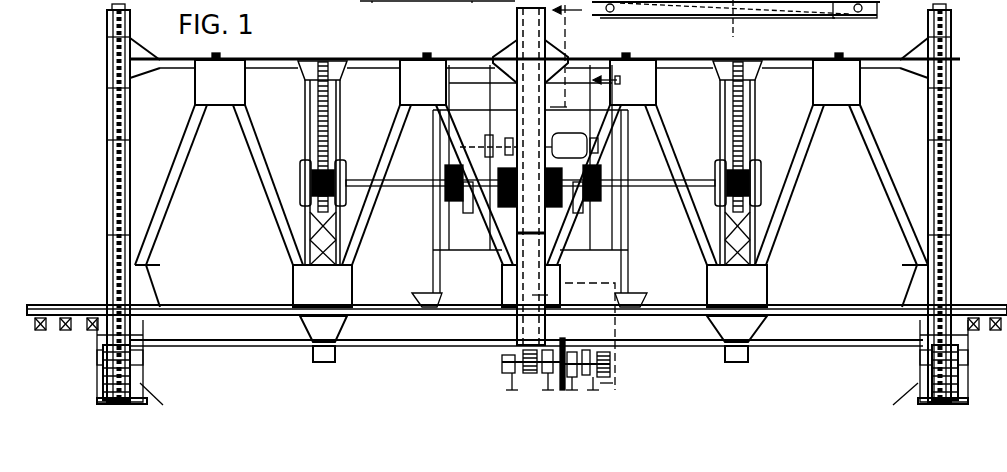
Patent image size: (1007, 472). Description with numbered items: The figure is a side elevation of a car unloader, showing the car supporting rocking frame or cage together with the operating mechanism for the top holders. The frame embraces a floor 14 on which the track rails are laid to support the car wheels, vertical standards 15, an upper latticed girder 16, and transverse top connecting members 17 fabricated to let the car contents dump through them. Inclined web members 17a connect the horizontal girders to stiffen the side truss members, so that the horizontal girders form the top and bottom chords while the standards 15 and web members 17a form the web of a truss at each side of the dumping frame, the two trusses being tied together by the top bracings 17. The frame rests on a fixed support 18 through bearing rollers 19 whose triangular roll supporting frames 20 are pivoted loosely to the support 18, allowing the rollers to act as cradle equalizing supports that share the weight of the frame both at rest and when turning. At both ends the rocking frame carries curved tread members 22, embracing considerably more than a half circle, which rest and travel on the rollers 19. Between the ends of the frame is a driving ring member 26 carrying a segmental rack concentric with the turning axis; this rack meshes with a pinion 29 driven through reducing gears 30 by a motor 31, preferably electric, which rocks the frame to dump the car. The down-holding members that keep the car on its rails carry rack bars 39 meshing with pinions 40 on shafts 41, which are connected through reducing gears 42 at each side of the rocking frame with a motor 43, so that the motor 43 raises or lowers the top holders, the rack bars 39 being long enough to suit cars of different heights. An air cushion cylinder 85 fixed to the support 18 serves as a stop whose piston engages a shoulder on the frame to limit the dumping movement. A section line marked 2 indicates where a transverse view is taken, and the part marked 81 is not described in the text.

The section line 2 is at (590, 203).
The floor 14 is at (200, 306).
The vertical standards 15 is at (340, 122).
The upper latticed girder 16 is at (752, 232).
The transverse top connecting member 17 is at (220, 57).
The web members 17a is at (257, 180).
The fixed support 18 is at (100, 398).
The bearing rollers 19 is at (136, 362).
The roll supporting frames 20 is at (100, 372).
The curved tread members 22 is at (107, 120).
The driving ring member 26 is at (548, 290).
The pinion 29 is at (536, 383).
The reducing gears 30 is at (568, 388).
The motor 31 is at (472, 2).
The rack bars 39 is at (330, 107).
The pinions 40 is at (346, 176).
The shafts 41 is at (405, 182).
The reducing gears 42 is at (478, 152).
The motor 43 is at (571, 146).
The bracket 81 is at (562, 200).
The air cushion cylinder 85 is at (372, 2).